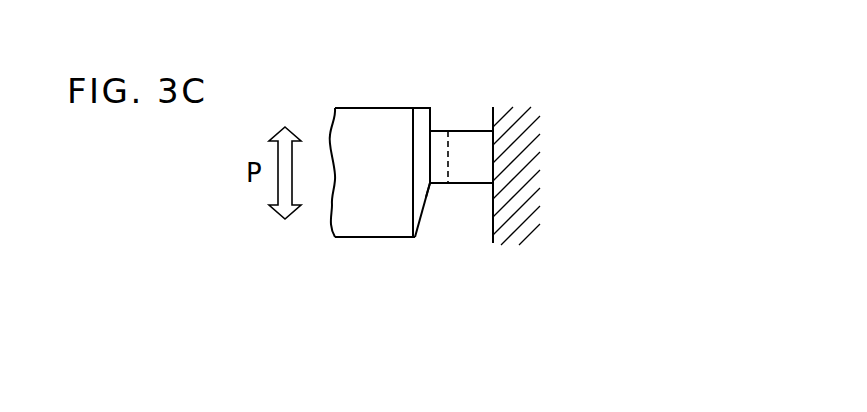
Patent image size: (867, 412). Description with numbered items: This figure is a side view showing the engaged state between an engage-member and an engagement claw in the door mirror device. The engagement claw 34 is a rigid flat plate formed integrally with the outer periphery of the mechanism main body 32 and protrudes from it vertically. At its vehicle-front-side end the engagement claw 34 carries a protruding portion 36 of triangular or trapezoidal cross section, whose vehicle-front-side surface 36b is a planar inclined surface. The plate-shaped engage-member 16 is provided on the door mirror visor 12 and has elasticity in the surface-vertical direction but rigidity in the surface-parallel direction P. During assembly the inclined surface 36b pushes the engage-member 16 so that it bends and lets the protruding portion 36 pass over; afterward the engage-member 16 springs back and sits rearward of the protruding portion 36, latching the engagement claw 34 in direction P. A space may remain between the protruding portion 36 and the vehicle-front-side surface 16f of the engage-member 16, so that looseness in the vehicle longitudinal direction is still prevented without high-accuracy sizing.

The mechanism main body 32 is at (373, 108).
The engagement claw 34 is at (433, 117).
The protruding portion 36 is at (442, 193).
The vehicle-front-side surface 36b is at (427, 228).
The engage-member 16 is at (463, 131).
The vehicle-front-side surface 16f is at (433, 185).
The door mirror visor 12 is at (497, 115).